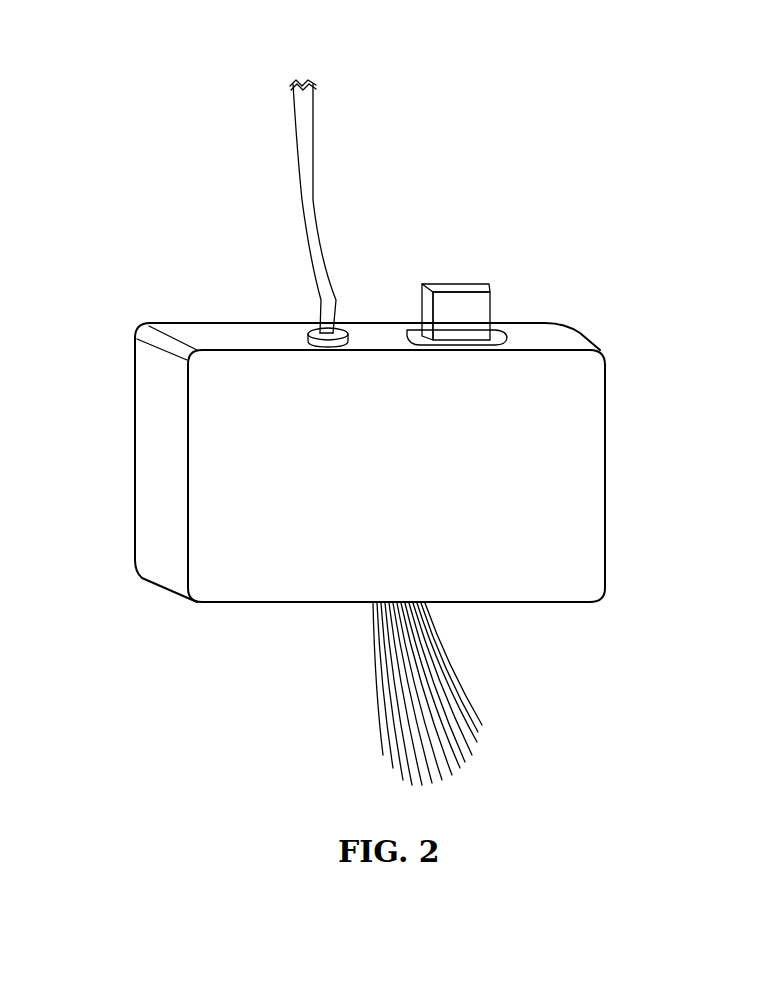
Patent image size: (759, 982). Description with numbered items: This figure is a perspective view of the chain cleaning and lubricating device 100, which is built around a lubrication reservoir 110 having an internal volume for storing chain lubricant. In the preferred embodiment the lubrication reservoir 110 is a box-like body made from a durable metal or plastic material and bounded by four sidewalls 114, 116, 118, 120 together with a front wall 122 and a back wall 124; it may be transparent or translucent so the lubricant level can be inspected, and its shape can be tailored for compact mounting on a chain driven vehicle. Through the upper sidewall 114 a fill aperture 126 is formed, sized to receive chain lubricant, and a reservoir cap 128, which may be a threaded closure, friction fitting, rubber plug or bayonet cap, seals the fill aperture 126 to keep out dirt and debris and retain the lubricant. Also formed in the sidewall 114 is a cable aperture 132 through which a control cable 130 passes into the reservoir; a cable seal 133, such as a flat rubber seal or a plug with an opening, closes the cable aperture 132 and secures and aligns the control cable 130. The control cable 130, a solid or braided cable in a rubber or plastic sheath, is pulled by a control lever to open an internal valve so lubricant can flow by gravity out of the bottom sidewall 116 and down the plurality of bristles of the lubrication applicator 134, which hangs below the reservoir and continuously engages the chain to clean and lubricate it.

The chain cleaning and lubricating device 100 is at (433, 148).
The lubrication reservoir 110 is at (375, 468).
The sidewall 114 is at (530, 336).
The bottom sidewall 116 is at (541, 603).
The sidewall 118 is at (157, 449).
The sidewall 120 is at (605, 470).
The front wall 122 is at (558, 419).
The back wall 124 is at (207, 313).
The fill aperture 126 is at (497, 337).
The reservoir cap 128 is at (465, 285).
The control cable 130 is at (308, 173).
The cable aperture 132 is at (309, 326).
The cable seal 133 is at (352, 330).
The lubrication applicator 134 is at (470, 745).